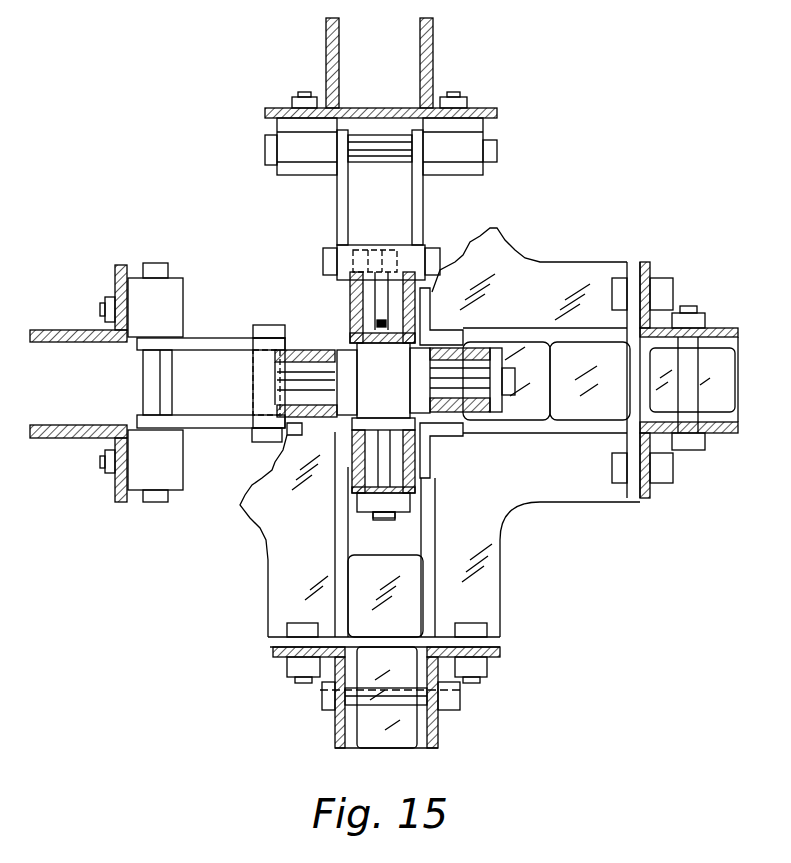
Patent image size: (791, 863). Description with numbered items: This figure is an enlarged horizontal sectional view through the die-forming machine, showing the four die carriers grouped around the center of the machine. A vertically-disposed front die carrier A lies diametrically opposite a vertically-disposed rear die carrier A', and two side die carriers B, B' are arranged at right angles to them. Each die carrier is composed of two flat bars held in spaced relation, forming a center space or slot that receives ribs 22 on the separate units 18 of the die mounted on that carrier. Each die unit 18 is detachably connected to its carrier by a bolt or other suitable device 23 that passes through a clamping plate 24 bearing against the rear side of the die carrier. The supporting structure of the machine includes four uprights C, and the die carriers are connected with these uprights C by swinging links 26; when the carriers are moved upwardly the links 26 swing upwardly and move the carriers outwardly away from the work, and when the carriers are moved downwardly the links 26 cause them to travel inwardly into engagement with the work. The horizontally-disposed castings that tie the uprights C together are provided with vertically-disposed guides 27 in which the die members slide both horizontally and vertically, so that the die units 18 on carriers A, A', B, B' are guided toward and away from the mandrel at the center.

The die unit 18 is at (355, 358).
The rib 22 is at (340, 378).
The bolt 23 is at (470, 385).
The clamping plate 24 is at (498, 404).
The swinging link 26 is at (418, 198).
The guide 27 is at (426, 326).
The front die carrier A is at (470, 412).
The rear die carrier A' is at (306, 423).
The side die carrier B is at (359, 307).
The side die carrier B' is at (356, 484).
The upright C is at (420, 44).